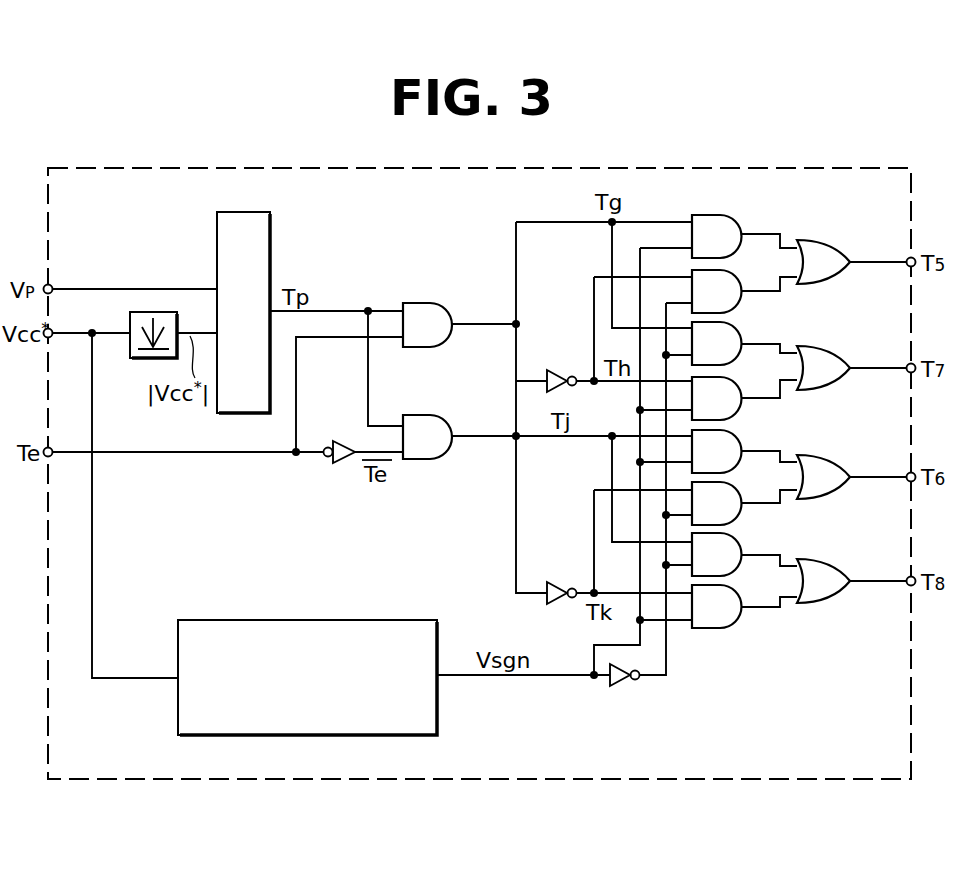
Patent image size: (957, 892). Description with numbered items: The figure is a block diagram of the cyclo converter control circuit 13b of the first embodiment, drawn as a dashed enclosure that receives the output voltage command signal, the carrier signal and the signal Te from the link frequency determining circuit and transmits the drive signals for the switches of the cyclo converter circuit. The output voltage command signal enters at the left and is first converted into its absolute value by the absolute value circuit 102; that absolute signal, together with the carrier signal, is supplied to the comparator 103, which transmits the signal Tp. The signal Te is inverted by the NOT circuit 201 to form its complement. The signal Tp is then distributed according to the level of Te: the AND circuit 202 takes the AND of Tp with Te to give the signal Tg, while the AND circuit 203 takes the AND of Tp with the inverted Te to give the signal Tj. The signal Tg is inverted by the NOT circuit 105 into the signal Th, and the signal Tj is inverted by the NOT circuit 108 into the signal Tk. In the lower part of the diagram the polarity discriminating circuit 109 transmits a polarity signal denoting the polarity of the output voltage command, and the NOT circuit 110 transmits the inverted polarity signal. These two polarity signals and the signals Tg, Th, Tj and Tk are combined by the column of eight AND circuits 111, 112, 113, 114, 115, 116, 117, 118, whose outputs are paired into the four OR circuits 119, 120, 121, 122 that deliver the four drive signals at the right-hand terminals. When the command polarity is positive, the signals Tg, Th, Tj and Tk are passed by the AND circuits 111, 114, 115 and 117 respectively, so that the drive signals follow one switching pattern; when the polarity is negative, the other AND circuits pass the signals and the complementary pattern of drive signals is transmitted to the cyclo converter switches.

The cyclo converter control circuit 13b is at (926, 154).
The absolute value circuit 102 is at (130, 326).
The comparator 103 is at (271, 215).
The NOT circuit 105 is at (552, 370).
The NOT circuit 108 is at (552, 582).
The polarity discriminating circuit 109 is at (318, 620).
The NOT circuit 110 is at (616, 688).
The AND circuit 111 is at (735, 215).
The AND circuit 112 is at (731, 271).
The AND circuit 113 is at (735, 322).
The AND circuit 114 is at (731, 378).
The AND circuit 115 is at (735, 430).
The AND circuit 116 is at (731, 483).
The AND circuit 117 is at (735, 533).
The AND circuit 118 is at (735, 630).
The OR circuit 119 is at (812, 241).
The OR circuit 120 is at (812, 346).
The OR circuit 121 is at (812, 456).
The OR circuit 122 is at (812, 559).
The NOT circuit 201 is at (347, 463).
The AND circuit 202 is at (428, 303).
The AND circuit 203 is at (430, 416).